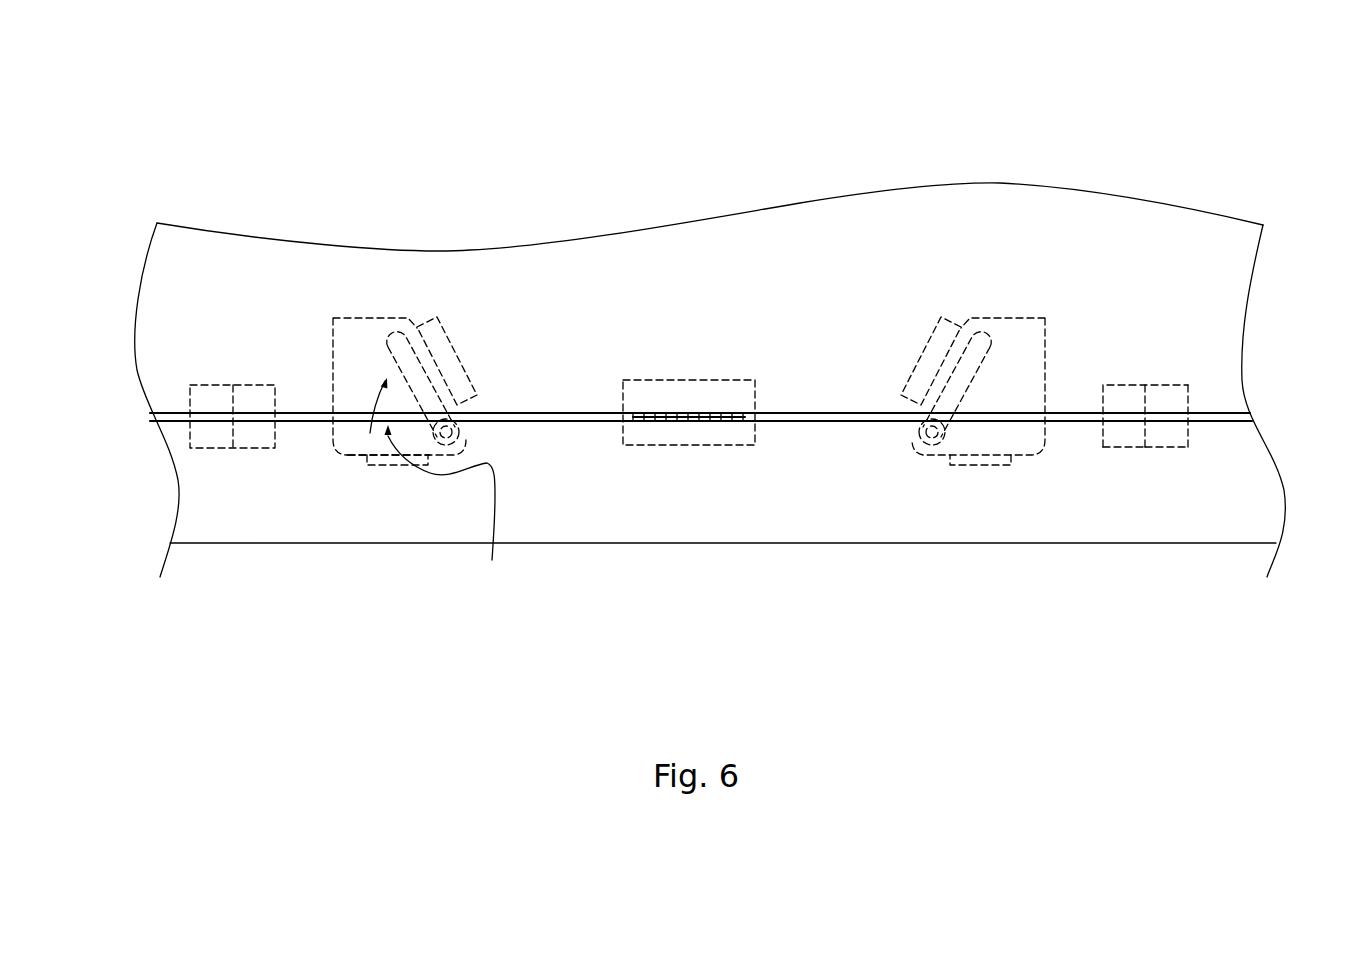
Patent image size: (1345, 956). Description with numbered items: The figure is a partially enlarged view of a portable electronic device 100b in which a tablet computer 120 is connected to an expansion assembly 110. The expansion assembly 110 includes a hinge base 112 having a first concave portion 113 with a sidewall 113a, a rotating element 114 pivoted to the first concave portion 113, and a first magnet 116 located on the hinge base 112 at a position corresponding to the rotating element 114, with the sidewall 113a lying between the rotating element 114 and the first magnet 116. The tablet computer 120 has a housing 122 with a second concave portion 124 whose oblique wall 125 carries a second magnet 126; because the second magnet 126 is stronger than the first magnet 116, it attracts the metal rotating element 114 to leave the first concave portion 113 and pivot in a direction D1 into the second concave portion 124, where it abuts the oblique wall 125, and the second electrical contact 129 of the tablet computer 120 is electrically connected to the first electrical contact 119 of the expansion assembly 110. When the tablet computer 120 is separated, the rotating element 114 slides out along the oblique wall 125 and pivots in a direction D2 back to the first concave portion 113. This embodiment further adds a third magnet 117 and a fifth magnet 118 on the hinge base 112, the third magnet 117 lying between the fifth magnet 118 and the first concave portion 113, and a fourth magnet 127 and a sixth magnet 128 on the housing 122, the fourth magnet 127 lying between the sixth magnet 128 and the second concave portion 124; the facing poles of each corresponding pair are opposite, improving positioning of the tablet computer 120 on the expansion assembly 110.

The portable electronic device 100b is at (192, 134).
The expansion assembly 110 is at (667, 504).
The hinge base 112 is at (722, 528).
The first concave portion 113 is at (293, 507).
The sidewall 113a is at (353, 458).
The rotating element 114 is at (408, 380).
The first magnet 116 is at (397, 525).
The third magnet 117 is at (1122, 440).
The fifth magnet 118 is at (1190, 447).
The first electrical contact 119 is at (648, 435).
The tablet computer 120 is at (656, 380).
The housing 122 is at (163, 252).
The second concave portion 124 is at (333, 333).
The oblique wall 125 is at (456, 300).
The second magnet 126 is at (450, 352).
The fourth magnet 127 is at (1118, 392).
The sixth magnet 128 is at (1175, 400).
The second electrical contact 129 is at (633, 395).
The direction D1 is at (377, 400).
The direction D2 is at (444, 507).